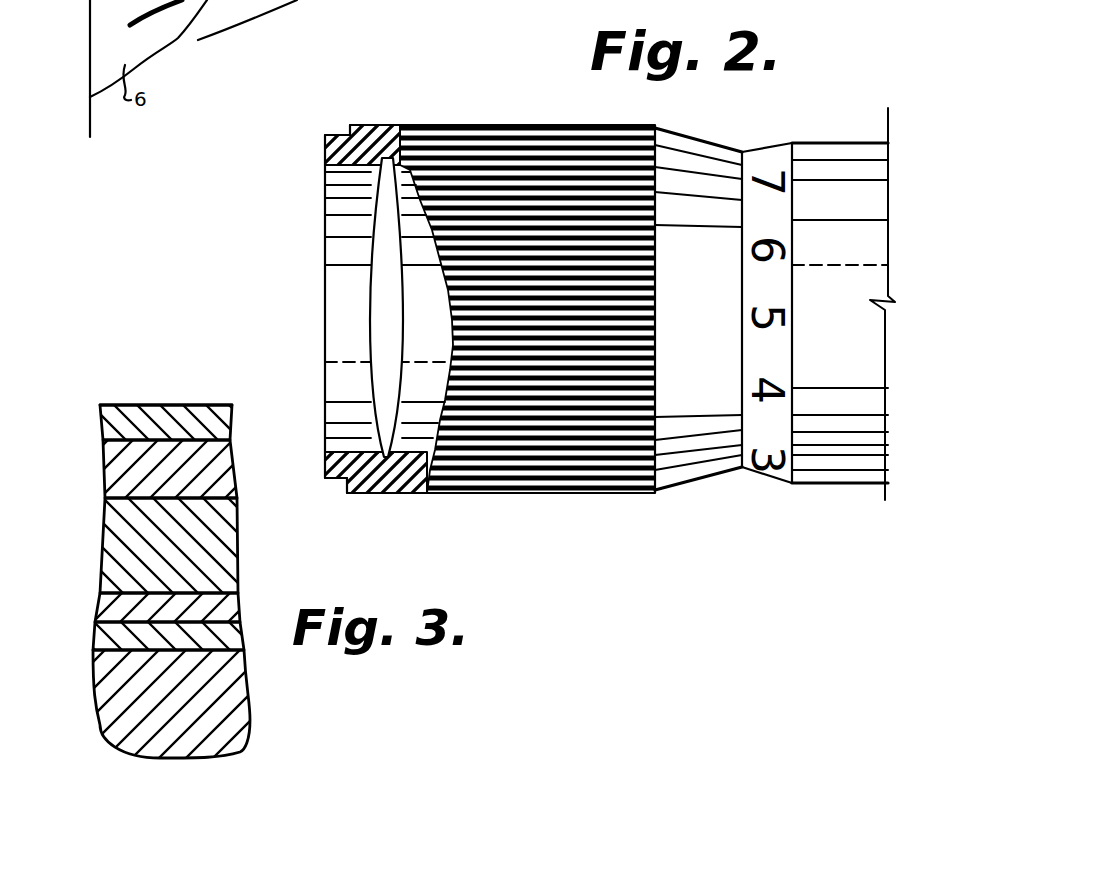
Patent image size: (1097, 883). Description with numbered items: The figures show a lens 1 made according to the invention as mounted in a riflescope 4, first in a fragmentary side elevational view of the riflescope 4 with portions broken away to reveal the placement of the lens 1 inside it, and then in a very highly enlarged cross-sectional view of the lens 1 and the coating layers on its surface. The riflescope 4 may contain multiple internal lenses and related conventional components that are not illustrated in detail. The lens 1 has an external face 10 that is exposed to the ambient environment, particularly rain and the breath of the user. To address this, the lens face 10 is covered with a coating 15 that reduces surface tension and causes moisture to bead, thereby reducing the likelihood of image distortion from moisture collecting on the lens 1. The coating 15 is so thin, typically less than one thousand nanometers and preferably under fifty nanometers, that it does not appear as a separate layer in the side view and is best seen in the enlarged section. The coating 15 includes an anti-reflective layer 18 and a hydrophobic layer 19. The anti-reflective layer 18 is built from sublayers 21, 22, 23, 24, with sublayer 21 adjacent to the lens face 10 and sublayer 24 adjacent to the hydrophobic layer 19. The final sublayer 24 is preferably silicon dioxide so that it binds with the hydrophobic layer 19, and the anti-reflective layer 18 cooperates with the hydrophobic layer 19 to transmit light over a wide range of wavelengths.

In FIG. 2, the lens 1 is at (369, 330).
In FIG. 3, the lens 1 is at (255, 707).
In FIG. 2, the riflescope 4 is at (684, 484).
In FIG. 2, the external face 10 is at (370, 278).
In FIG. 3, the external face 10 is at (212, 650).
In FIG. 2, the coating 15 is at (370, 224).
In FIG. 3, the coating 15 is at (164, 540).
In FIG. 3, the anti-reflective layer 18 is at (164, 522).
In FIG. 3, the hydrophobic layer 19 is at (232, 420).
In FIG. 3, the sublayer 21 is at (104, 640).
In FIG. 3, the sublayer 22 is at (97, 603).
In FIG. 3, the sublayer 23 is at (102, 540).
In FIG. 3, the sublayer 24 is at (102, 482).